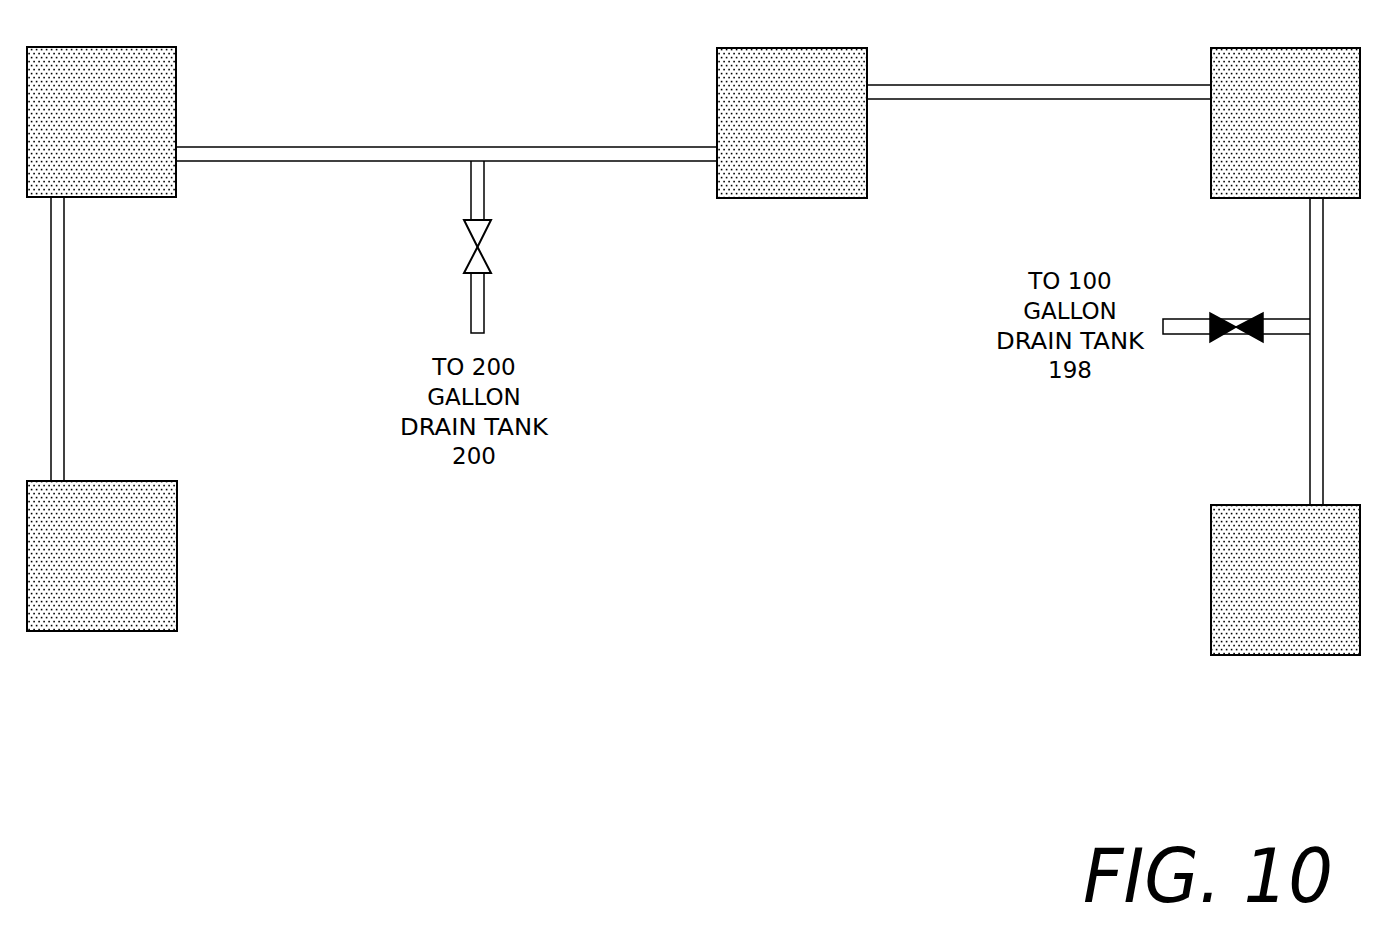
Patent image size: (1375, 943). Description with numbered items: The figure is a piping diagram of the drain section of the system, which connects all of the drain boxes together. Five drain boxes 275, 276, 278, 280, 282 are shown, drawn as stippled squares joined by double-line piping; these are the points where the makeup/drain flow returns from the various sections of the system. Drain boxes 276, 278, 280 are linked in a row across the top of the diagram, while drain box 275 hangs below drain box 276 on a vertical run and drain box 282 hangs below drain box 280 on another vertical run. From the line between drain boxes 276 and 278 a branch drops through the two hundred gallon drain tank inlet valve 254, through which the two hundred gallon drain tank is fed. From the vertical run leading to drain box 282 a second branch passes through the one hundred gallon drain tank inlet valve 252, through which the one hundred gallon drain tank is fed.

The drain box 276 is at (187, 60).
The drain box 278 is at (877, 153).
The drain box 280 is at (1197, 60).
The drain box 275 is at (187, 490).
The drain box 282 is at (1193, 580).
The 200 gallon drain tank inlet valve 254 is at (483, 247).
The 100 gallon drain tank inlet valve 252 is at (1236, 318).